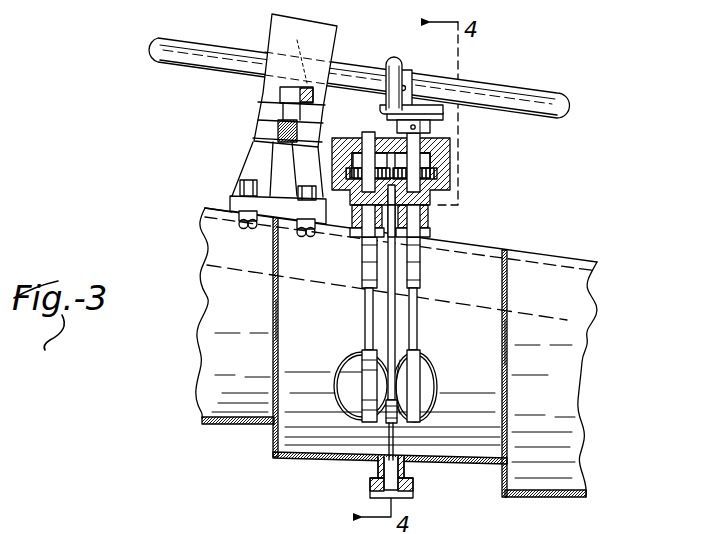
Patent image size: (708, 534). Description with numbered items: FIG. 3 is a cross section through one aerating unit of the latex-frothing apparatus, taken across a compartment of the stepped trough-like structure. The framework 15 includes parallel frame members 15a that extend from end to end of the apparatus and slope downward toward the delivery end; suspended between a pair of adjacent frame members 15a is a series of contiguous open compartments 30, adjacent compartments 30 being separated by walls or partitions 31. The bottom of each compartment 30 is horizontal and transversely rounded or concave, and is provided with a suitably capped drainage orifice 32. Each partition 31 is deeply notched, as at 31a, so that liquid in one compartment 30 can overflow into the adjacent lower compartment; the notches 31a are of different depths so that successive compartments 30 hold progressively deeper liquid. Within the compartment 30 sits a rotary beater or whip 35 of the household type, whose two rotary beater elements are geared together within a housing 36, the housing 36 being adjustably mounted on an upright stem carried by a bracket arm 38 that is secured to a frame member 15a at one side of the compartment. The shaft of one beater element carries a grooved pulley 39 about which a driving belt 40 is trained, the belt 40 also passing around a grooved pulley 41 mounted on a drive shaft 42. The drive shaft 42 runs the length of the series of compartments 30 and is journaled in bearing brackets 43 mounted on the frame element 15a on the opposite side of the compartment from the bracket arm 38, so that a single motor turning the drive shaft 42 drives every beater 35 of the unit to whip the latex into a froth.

The framework 15 is at (207, 204).
The frame member 15a is at (567, 320).
The compartment 30 is at (228, 413).
The partition 31 is at (279, 358).
The notch 31a is at (279, 332).
The drainage orifice 32 is at (407, 468).
The rotary beater 35 is at (434, 370).
The housing 36 is at (452, 158).
The bracket arm 38 is at (432, 220).
The grooved pulley 39 is at (431, 127).
The driving belt 40 is at (393, 57).
The grooved pulley 41 is at (410, 75).
The drive shaft 42 is at (533, 98).
The bearing bracket 43 is at (273, 26).